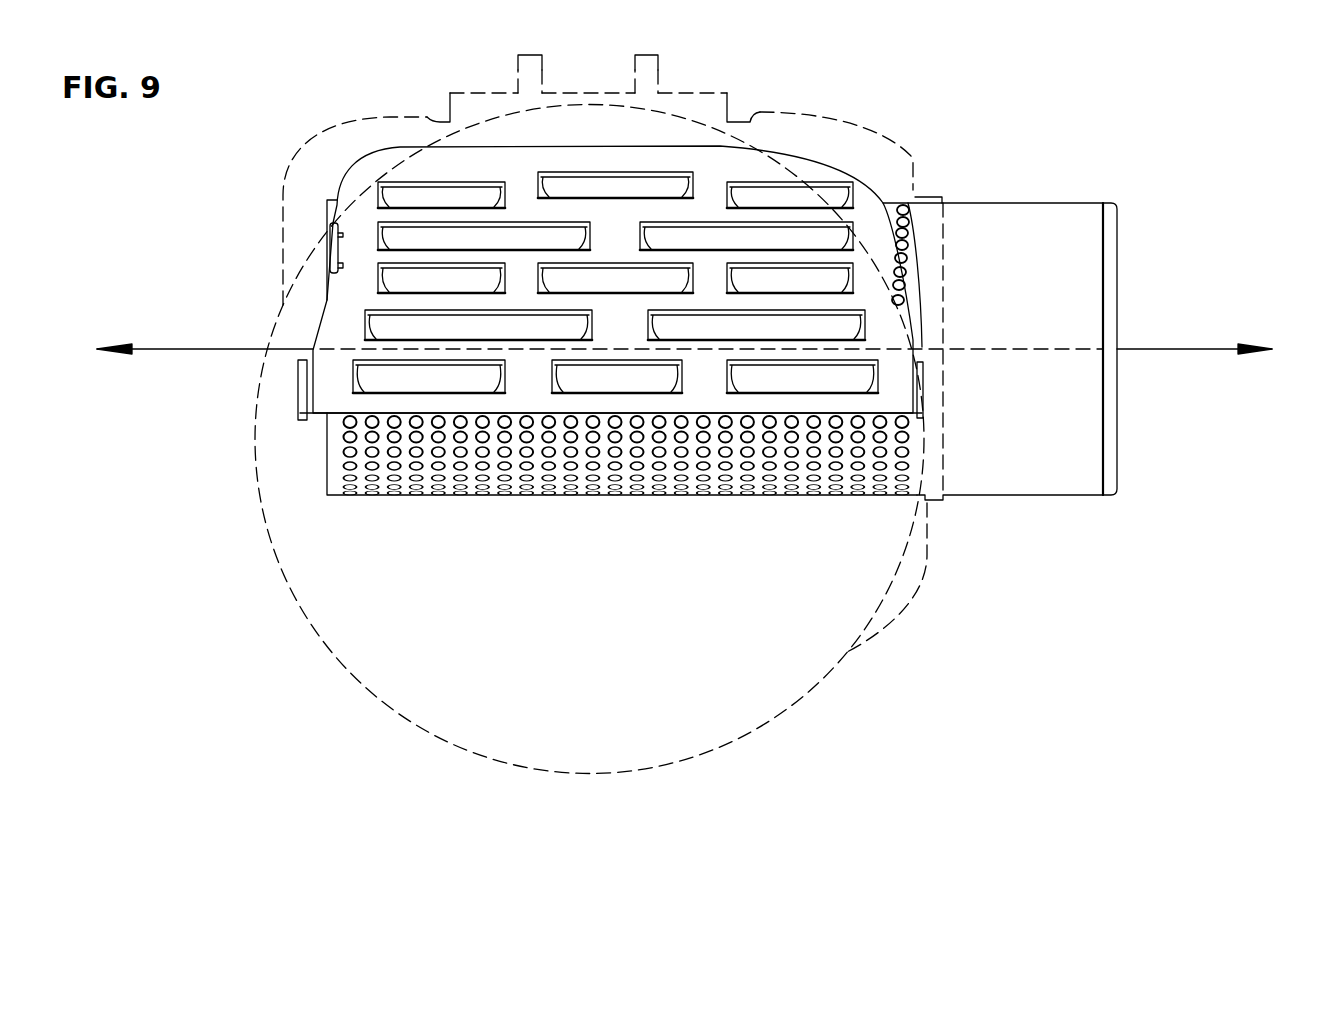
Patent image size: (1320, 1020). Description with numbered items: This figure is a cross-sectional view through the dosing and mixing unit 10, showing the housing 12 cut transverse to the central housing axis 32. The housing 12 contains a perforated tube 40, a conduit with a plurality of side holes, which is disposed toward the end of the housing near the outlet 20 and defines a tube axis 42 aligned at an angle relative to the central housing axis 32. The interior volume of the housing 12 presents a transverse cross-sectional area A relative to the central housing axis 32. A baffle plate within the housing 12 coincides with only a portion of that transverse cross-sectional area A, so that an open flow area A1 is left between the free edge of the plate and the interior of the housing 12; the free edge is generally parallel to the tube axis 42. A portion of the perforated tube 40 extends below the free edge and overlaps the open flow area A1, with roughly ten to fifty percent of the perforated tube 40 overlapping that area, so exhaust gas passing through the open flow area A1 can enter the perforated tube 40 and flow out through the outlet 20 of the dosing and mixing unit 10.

The dosing and mixing unit 10 is at (230, 373).
The housing 12 is at (295, 595).
The outlet 20 is at (1120, 231).
The central housing axis 32 is at (612, 413).
The perforated tube 40 is at (1022, 202).
The tube axis 42 is at (1217, 343).
The transverse cross-sectional area A is at (702, 750).
The open flow area A1 is at (625, 666).